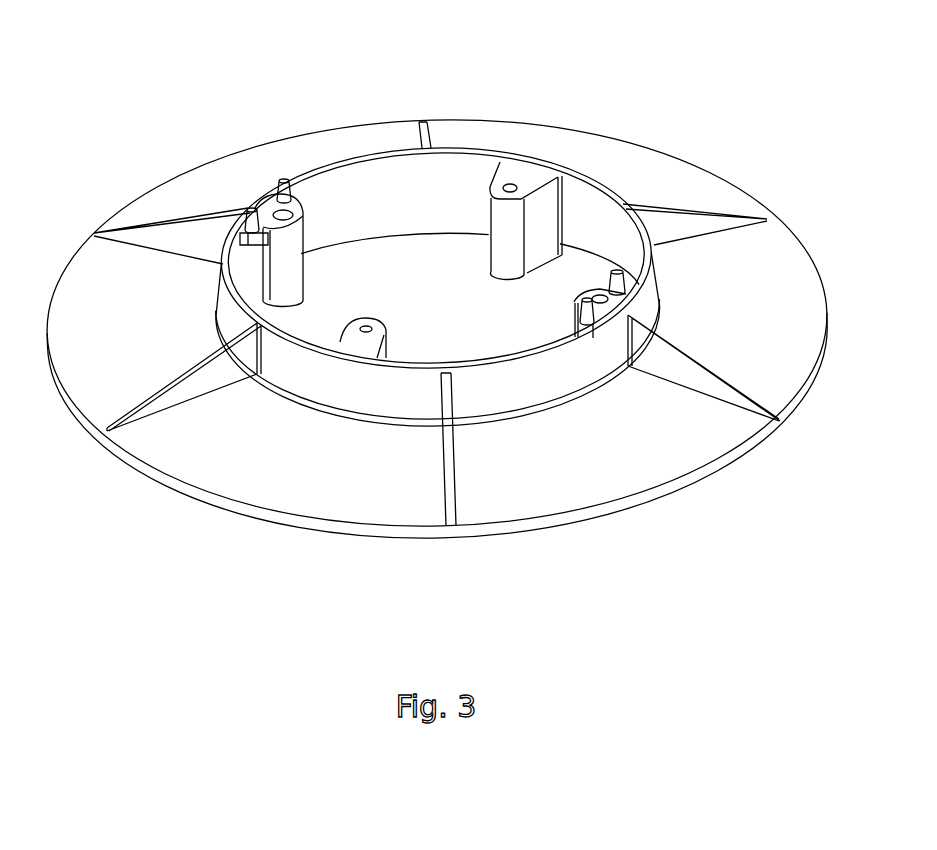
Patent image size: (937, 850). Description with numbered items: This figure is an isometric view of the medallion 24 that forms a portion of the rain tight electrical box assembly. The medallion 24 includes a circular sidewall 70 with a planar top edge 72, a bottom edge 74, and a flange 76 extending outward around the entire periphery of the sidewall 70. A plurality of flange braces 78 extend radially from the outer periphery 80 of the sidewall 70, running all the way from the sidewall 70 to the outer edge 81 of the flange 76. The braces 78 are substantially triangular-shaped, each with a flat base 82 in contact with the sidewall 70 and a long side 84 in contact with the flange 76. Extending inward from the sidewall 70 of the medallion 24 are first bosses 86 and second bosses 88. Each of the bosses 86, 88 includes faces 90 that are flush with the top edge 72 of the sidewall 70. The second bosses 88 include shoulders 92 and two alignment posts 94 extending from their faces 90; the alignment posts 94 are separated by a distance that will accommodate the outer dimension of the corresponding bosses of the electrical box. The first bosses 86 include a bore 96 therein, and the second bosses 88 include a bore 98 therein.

The medallion 24 is at (110, 99).
The circular sidewall 70 is at (389, 207).
The top edge 72 is at (603, 180).
The bottom edge 74 is at (503, 418).
The flange 76 is at (590, 464).
The flange braces 78 is at (693, 212).
The outer periphery 80 is at (483, 150).
The outer edge 81 is at (657, 497).
The flat base 82 is at (673, 349).
The long side 84 is at (673, 385).
The first bosses 86 is at (503, 255).
The second bosses 88 is at (287, 280).
The faces 90 is at (256, 200).
The shoulders 92 is at (306, 201).
The alignment posts 94 is at (280, 178).
The bore 96 is at (374, 326).
The bore 98 is at (587, 288).